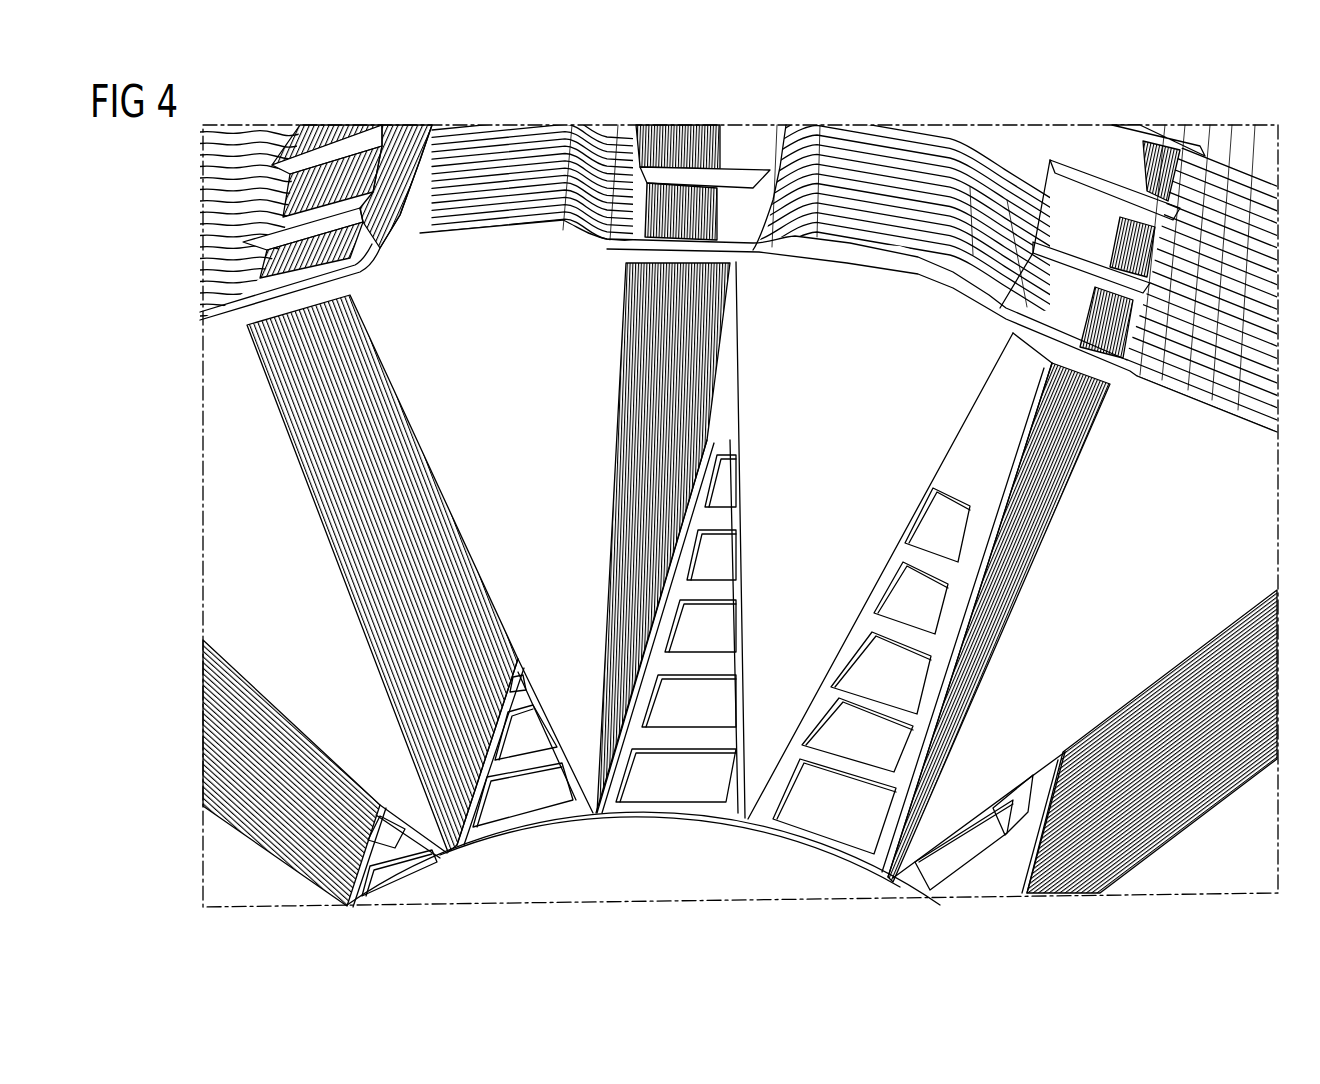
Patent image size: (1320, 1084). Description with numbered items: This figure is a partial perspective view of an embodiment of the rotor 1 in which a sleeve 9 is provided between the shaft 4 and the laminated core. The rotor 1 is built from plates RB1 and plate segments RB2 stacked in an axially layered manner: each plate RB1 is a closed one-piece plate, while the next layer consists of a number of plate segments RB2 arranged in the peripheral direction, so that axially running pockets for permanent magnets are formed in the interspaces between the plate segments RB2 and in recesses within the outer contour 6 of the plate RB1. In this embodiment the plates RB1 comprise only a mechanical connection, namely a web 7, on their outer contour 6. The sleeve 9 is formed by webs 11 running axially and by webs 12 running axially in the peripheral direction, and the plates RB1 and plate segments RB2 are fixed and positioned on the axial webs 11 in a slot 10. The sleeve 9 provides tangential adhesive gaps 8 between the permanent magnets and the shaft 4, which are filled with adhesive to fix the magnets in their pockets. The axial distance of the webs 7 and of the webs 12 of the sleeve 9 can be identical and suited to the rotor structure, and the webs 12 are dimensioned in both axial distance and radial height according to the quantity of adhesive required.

The rotor 1 is at (1278, 513).
The shaft 4 is at (632, 893).
The outer contour 6 is at (882, 264).
The web 7 is at (1058, 261).
The adhesive gap 8 is at (812, 822).
The sleeve 9 is at (679, 802).
The slot 10 is at (593, 815).
The axial web 11 is at (667, 627).
The peripheral web 12 is at (724, 667).
The plate RB1 is at (842, 522).
The plate segment RB2 is at (942, 188).